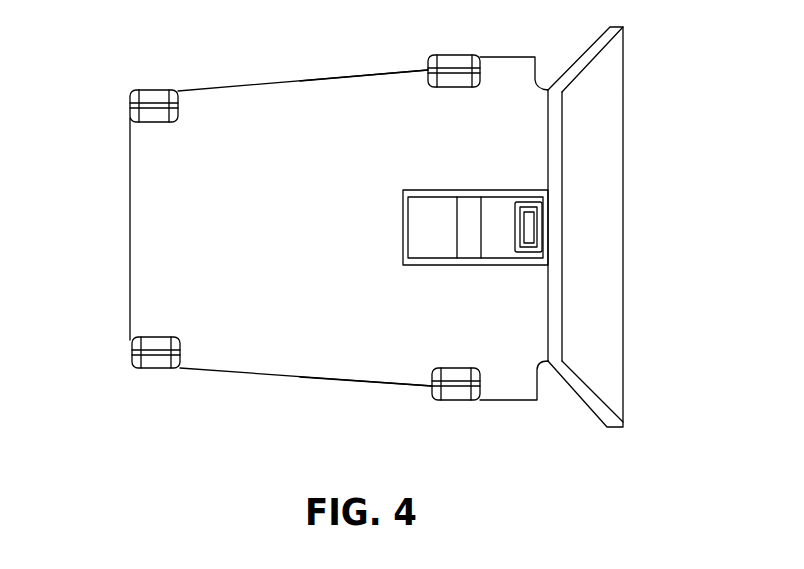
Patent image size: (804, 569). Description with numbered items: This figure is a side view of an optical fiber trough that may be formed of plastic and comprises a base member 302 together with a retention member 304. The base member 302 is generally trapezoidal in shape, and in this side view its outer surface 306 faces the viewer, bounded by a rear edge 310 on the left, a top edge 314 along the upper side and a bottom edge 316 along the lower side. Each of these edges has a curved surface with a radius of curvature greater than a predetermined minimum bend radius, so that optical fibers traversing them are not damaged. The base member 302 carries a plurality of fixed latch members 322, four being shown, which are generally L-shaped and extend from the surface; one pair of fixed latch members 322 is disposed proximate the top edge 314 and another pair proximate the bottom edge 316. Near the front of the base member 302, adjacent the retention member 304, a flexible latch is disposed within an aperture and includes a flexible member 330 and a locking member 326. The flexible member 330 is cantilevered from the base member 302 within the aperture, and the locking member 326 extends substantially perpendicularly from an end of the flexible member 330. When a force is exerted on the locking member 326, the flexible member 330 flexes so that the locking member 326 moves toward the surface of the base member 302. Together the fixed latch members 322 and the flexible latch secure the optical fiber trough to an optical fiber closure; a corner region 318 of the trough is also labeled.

The base member 302 is at (326, 368).
The retention member 304 is at (623, 226).
The outer surface 306 is at (243, 94).
The rear edge 310 is at (130, 220).
The top edge 314 is at (328, 78).
The bottom edge 316 is at (240, 376).
The corner notch 318 is at (552, 362).
The fixed latch members 322 is at (158, 90).
The locking member 326 is at (524, 208).
The flexible member 330 is at (430, 248).